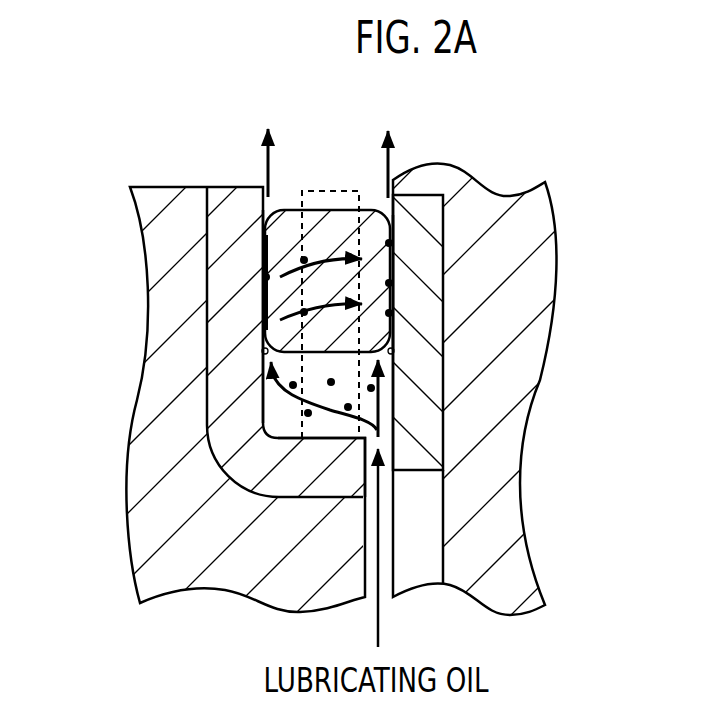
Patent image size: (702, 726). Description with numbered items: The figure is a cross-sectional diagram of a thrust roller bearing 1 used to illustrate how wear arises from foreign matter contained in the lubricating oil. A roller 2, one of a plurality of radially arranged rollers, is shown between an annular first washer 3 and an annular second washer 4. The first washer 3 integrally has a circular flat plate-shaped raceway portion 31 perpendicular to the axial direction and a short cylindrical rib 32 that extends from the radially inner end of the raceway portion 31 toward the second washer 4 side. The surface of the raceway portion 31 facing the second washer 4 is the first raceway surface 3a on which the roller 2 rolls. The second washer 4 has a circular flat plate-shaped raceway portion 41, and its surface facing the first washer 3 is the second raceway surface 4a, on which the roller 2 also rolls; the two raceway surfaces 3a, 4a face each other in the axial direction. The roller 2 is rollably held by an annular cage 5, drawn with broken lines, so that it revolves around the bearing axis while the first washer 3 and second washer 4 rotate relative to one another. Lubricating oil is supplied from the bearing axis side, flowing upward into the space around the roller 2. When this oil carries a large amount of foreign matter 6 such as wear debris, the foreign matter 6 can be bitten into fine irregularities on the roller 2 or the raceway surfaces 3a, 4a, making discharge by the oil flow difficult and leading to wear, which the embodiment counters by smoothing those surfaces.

The thrust roller bearing 1 is at (194, 178).
The roller 2 is at (333, 230).
The first washer 3 is at (221, 178).
The raceway portion 31 is at (215, 278).
The rib 32 is at (301, 480).
The first raceway surface 3a is at (262, 352).
The second washer 4 is at (447, 187).
The raceway portion 41 is at (428, 267).
The second raceway surface 4a is at (394, 352).
The cage 5 is at (310, 190).
The foreign matter 6 is at (308, 413).